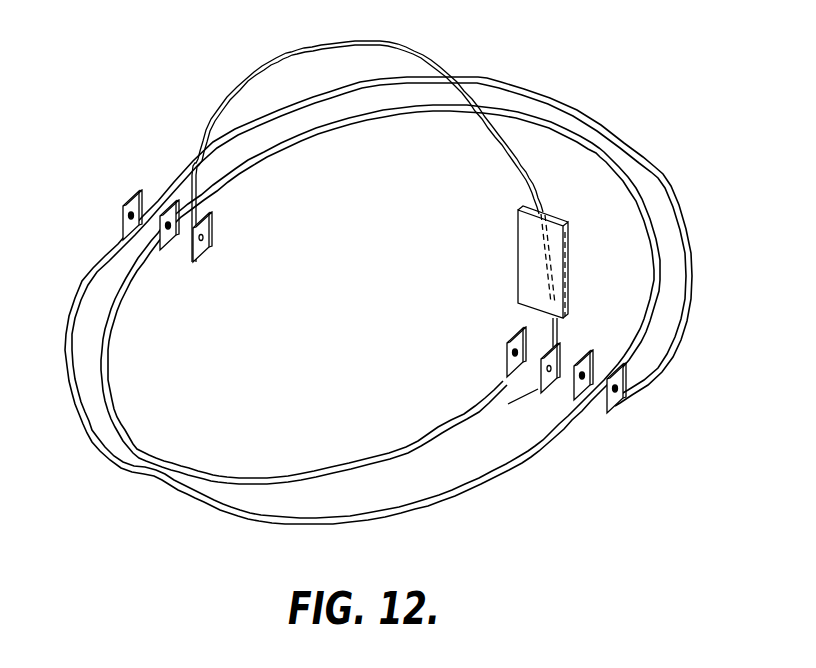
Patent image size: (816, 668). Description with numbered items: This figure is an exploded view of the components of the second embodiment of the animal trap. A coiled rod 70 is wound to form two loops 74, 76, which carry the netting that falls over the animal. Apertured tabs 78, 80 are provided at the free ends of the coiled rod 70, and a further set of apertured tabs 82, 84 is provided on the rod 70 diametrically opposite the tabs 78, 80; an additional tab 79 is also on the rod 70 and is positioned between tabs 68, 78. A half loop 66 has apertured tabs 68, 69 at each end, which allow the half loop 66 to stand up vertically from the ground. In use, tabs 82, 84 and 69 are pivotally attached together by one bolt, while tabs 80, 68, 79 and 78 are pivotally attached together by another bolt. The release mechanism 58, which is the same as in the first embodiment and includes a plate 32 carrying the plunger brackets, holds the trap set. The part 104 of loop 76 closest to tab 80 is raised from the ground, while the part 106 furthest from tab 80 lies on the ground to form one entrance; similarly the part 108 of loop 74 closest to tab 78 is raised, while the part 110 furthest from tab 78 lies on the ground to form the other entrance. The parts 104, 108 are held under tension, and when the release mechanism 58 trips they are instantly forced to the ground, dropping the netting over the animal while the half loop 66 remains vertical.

The plate 32 is at (528, 253).
The release mechanism 58 is at (504, 257).
The half loop 66 is at (381, 42).
The apertured tab 68 is at (486, 405).
The apertured tab 69 is at (205, 250).
The coiled rod 70 is at (523, 466).
The loop 74 is at (108, 397).
The loop 76 is at (353, 461).
The apertured tab 78 is at (616, 414).
The additional tab 79 is at (588, 351).
The apertured tab 80 is at (503, 352).
The apertured tab 82 is at (128, 197).
The apertured tab 84 is at (170, 195).
The part of loop 104 is at (122, 467).
The part of loop 106 is at (508, 84).
The part of loop 108 is at (671, 183).
The part of loop 110 is at (248, 516).